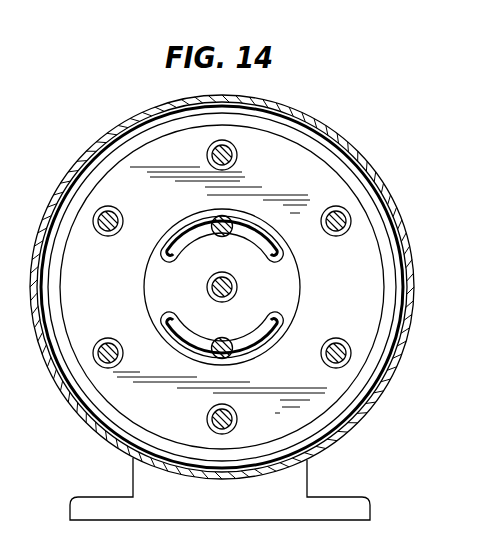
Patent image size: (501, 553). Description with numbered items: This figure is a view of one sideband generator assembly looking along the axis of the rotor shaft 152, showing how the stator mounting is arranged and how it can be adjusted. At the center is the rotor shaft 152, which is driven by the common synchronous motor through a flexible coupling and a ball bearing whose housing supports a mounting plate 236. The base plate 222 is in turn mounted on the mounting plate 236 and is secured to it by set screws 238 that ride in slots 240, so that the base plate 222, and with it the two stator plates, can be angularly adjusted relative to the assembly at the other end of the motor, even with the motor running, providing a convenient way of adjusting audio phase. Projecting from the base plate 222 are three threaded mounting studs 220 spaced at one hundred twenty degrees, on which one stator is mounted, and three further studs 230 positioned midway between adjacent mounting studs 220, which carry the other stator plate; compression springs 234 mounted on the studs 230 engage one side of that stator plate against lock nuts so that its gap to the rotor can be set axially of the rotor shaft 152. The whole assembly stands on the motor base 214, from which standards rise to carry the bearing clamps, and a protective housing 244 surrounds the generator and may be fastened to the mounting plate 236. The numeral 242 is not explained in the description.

The rotor shaft 152 is at (237, 289).
The motor base 214 is at (297, 483).
The mounting studs 220 is at (230, 145).
The base plate 222 is at (315, 178).
The studs 230 is at (95, 221).
The compression springs 234 is at (132, 196).
The mounting plate 236 is at (162, 130).
The set screws 238 is at (227, 215).
The slots 240 is at (193, 233).
The central pivot screw 242 is at (207, 287).
The housing 244 is at (88, 147).